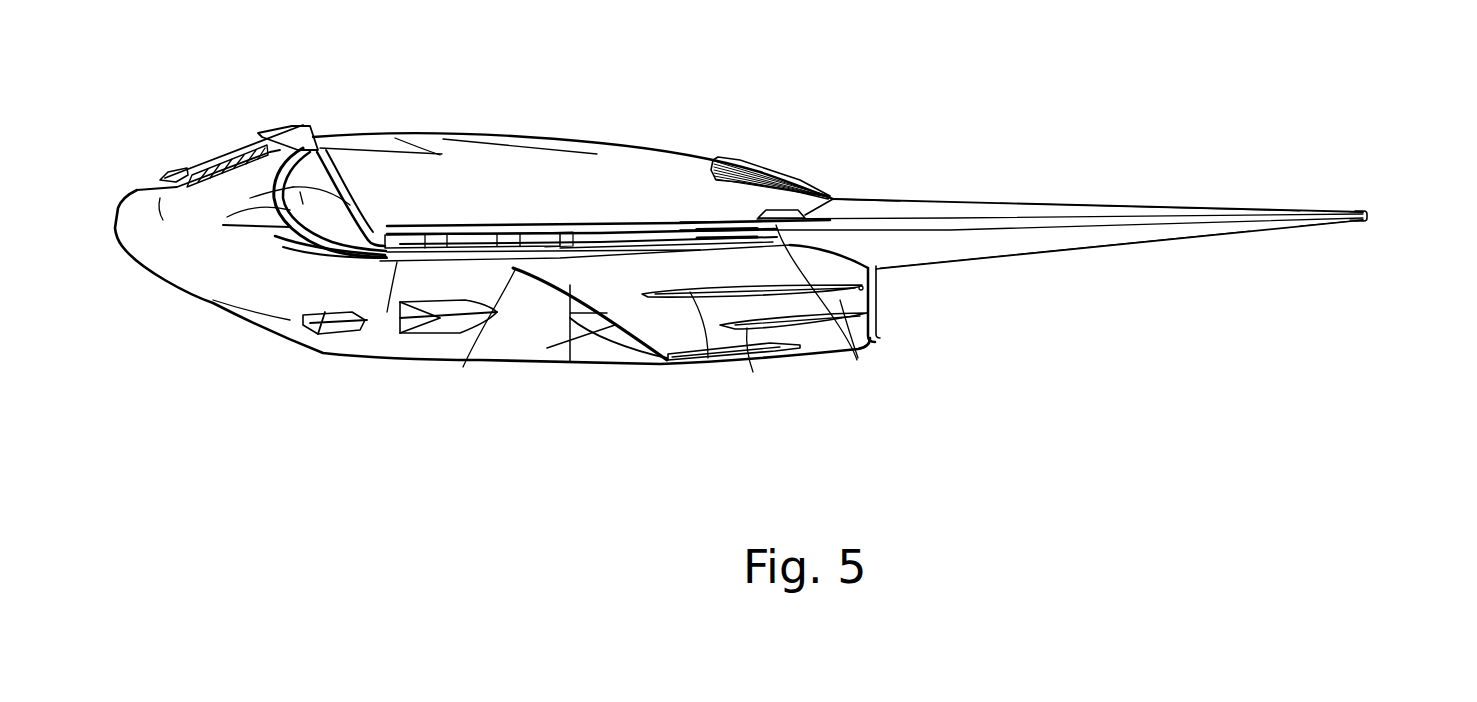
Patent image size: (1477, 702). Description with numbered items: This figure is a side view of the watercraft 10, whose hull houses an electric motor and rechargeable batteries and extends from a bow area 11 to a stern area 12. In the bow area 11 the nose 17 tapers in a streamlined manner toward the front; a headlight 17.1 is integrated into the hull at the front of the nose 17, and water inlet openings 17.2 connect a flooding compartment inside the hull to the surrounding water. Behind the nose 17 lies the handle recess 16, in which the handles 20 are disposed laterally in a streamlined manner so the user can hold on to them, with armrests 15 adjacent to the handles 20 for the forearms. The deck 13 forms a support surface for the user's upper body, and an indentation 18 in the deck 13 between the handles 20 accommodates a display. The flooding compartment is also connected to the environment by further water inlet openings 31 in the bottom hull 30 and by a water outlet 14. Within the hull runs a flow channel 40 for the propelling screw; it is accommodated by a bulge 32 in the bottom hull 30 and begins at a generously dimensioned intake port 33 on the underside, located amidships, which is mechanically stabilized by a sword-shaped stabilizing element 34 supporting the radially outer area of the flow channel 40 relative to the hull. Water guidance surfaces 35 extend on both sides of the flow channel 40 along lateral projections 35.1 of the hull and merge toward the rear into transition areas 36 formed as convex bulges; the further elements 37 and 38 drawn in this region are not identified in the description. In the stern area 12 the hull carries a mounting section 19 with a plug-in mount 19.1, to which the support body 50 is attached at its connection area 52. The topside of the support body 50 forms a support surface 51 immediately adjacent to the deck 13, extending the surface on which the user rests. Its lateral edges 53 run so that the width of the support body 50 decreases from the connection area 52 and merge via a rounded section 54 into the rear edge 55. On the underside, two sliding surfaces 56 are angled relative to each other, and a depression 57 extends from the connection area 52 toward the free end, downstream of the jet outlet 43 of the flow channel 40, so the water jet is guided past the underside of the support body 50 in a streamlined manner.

The watercraft 10 is at (575, 382).
The bow area 11 is at (235, 328).
The stern area 12 is at (822, 368).
The deck 13 is at (431, 128).
The water outlet 14 is at (779, 197).
The armrests 15 is at (472, 250).
The handle recess 16 is at (286, 152).
The nose 17 is at (170, 253).
The headlight 17.1 is at (170, 178).
The water inlet openings 17.2 is at (232, 175).
The indentation 18 is at (342, 128).
The mounting section 19 is at (784, 210).
The plug-in mount 19.1 is at (832, 212).
The handles 20 is at (338, 203).
The bottom hull 30 is at (637, 367).
The further water inlet openings 31 is at (328, 333).
The bulge 32 is at (777, 332).
The intake port 33 is at (597, 328).
The stabilizing element 34 is at (613, 350).
The water guidance surfaces 35 is at (630, 267).
The lateral projections 35.1 is at (718, 227).
The transition areas 36 is at (838, 257).
The upper stabilizer fin 37 is at (828, 305).
The lower stabilizer fin 38 is at (713, 360).
The flow channel 40 is at (880, 291).
The jet outlet 43 is at (877, 314).
The support body 50 is at (1154, 190).
The support surface 51 is at (1070, 210).
The connection area 52 is at (840, 215).
The lateral edges 53 is at (1222, 212).
The rounded section 54 is at (1342, 218).
The rear edge 55 is at (1369, 215).
The sliding surfaces 56 is at (1140, 236).
The depression 57 is at (979, 268).